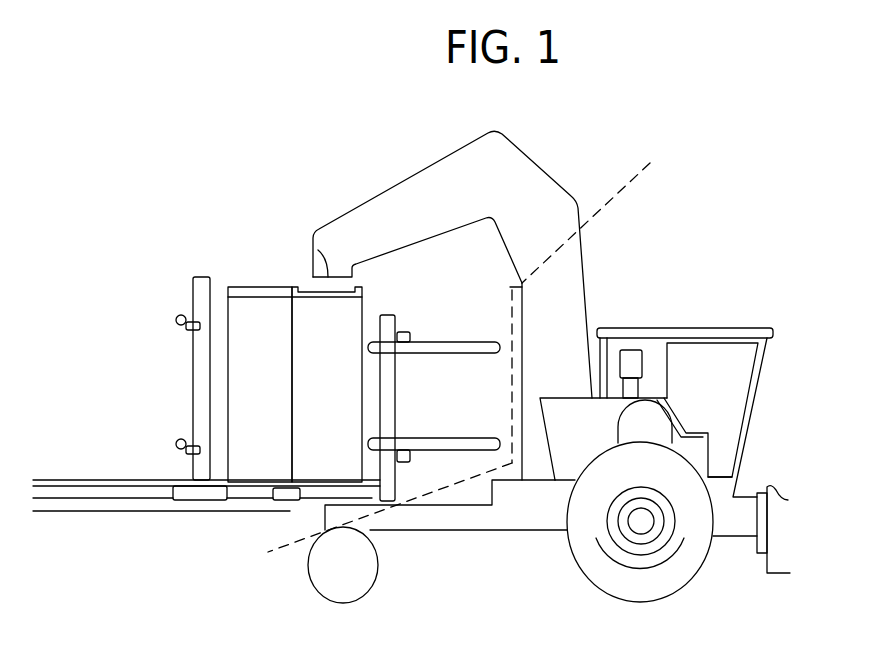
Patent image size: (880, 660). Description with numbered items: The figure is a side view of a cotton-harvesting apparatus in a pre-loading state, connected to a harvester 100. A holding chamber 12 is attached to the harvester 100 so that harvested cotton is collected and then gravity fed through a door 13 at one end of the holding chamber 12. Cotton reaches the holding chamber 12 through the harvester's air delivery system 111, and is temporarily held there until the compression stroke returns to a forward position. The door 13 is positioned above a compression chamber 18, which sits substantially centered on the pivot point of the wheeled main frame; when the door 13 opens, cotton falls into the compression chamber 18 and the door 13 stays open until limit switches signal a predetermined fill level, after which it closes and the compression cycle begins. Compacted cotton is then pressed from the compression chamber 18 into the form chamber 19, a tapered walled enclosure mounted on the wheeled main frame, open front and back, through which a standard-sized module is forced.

The holding chamber 12 is at (411, 232).
The door 13 is at (318, 250).
The compression chamber 18 is at (340, 400).
The form chamber 19 is at (250, 400).
The harvester 100 is at (623, 307).
The air delivery system 111 is at (565, 350).